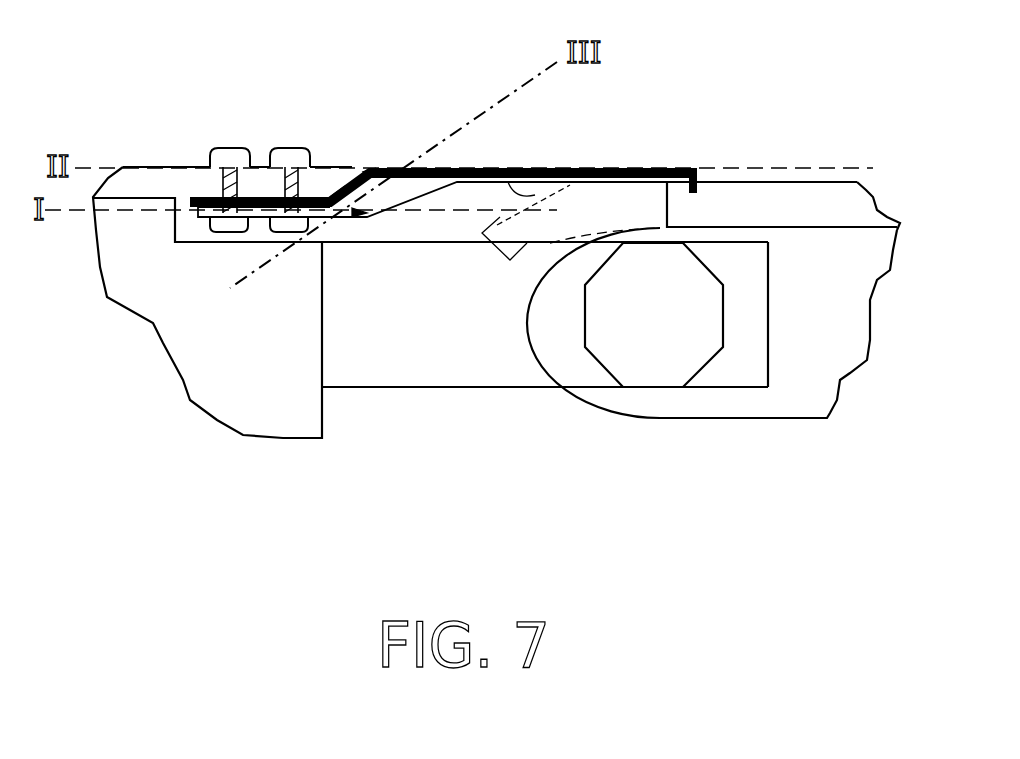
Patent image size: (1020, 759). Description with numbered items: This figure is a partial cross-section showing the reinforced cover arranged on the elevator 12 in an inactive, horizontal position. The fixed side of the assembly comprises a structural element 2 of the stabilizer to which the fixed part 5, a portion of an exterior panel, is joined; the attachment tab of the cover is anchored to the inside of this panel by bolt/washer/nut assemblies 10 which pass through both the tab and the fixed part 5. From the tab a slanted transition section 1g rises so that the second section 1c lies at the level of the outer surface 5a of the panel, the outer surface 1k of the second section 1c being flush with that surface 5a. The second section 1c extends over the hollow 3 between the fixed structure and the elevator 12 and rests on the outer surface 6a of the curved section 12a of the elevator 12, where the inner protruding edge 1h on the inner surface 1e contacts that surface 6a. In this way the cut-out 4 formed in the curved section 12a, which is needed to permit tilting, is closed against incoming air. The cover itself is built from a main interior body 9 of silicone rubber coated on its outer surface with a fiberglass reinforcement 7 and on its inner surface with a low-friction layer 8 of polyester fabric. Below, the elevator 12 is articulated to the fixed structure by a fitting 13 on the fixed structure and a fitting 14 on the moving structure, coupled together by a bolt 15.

The structural element of the vehicle 2 is at (260, 363).
The hollow 3 is at (427, 237).
The cut-out 4 is at (612, 222).
The fixed part 5 is at (192, 183).
The outer surface of the fixed part of the vehicle 5a is at (258, 166).
The outer surface of the moving part 6a is at (762, 165).
The reinforcement means 7 is at (350, 177).
The low-friction layer 8 is at (367, 212).
The main interior body of elastic material 9 is at (388, 190).
The means of attaching the first section to the structural element 10 is at (293, 223).
The elevator 12 is at (683, 200).
The curved section of the elevator 12a is at (525, 227).
The fitting on the fixed structure 13 is at (378, 370).
The fittings on the moving structure 14 is at (740, 418).
The bolt 15 is at (653, 357).
The second section 1c is at (497, 168).
The inner surface of the second section 1e is at (472, 183).
The transition section 1g is at (373, 167).
The inner protruding edge 1h is at (540, 183).
The outer surface of the second section 1k is at (517, 167).